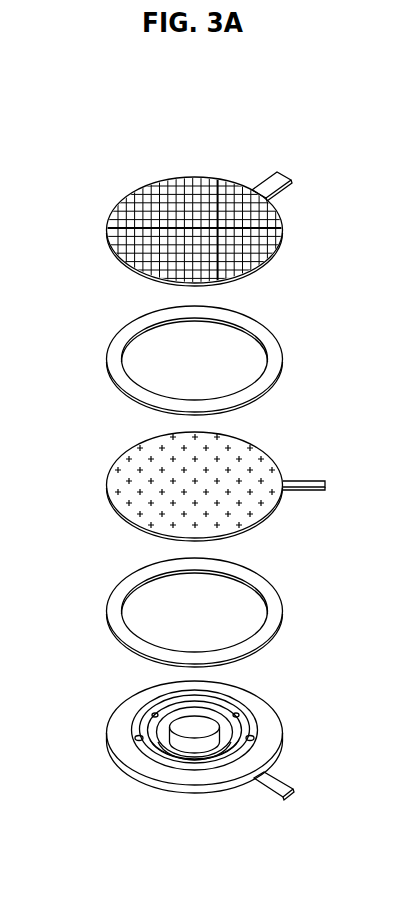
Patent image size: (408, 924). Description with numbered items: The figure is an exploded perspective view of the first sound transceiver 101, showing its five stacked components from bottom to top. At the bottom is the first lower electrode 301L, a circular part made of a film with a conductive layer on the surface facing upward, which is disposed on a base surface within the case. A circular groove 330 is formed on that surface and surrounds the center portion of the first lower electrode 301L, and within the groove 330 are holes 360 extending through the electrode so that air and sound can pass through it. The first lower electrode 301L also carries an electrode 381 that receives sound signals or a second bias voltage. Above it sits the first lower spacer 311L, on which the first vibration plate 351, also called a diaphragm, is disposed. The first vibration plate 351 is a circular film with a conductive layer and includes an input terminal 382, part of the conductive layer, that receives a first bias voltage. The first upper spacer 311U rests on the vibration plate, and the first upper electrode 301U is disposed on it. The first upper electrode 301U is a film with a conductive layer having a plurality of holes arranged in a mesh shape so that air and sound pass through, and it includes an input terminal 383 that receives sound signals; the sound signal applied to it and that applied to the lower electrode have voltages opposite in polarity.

The first sound transceiver 101 is at (122, 162).
The first upper electrode 301U is at (122, 224).
The input terminal 383 is at (263, 188).
The first upper spacer 311U is at (116, 358).
The first vibration plate 351 is at (120, 480).
The input terminal 382 is at (301, 481).
The first lower spacer 311L is at (116, 610).
The first lower electrode 301L is at (122, 714).
The groove 330 is at (148, 728).
The hole 360 is at (137, 733).
The electrode 381 is at (274, 783).